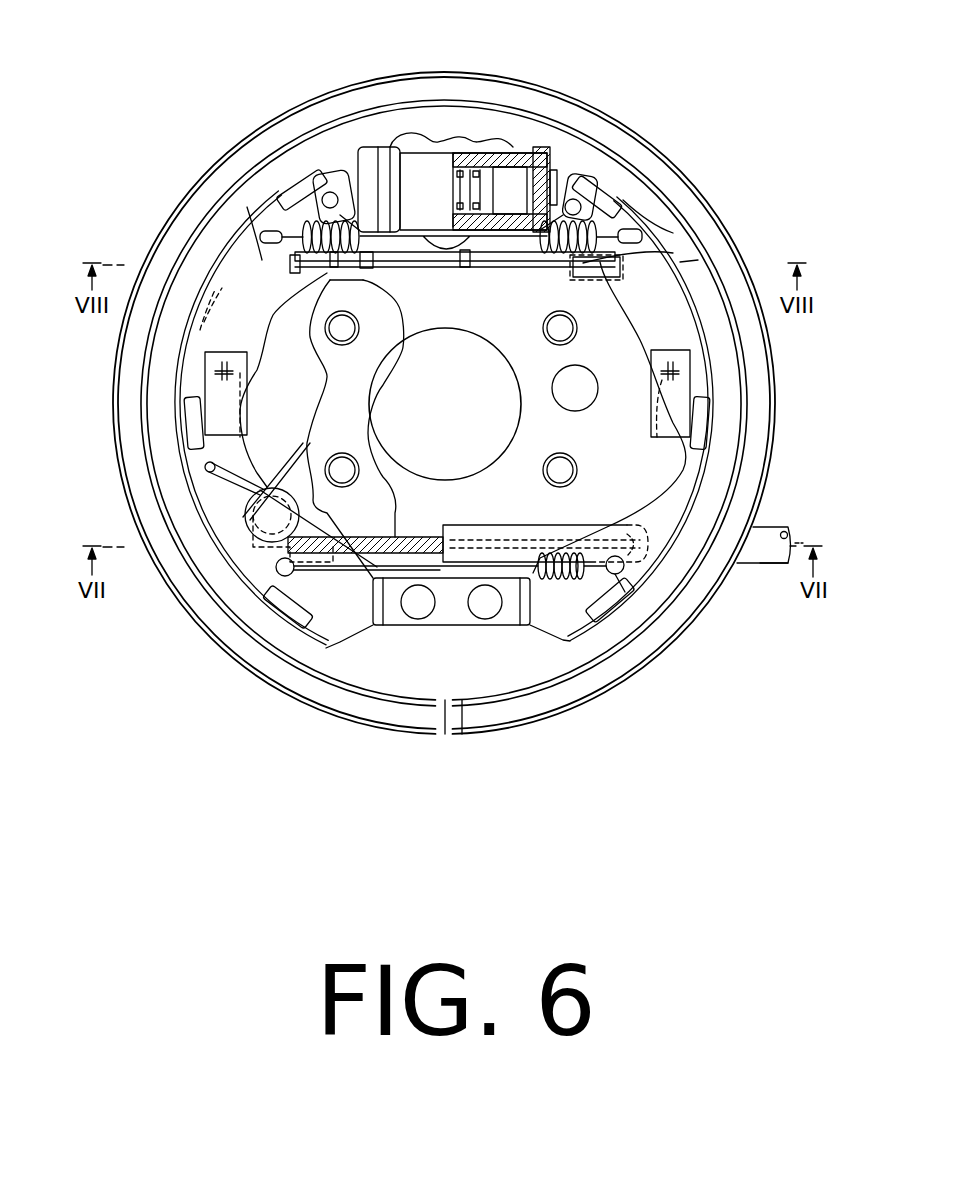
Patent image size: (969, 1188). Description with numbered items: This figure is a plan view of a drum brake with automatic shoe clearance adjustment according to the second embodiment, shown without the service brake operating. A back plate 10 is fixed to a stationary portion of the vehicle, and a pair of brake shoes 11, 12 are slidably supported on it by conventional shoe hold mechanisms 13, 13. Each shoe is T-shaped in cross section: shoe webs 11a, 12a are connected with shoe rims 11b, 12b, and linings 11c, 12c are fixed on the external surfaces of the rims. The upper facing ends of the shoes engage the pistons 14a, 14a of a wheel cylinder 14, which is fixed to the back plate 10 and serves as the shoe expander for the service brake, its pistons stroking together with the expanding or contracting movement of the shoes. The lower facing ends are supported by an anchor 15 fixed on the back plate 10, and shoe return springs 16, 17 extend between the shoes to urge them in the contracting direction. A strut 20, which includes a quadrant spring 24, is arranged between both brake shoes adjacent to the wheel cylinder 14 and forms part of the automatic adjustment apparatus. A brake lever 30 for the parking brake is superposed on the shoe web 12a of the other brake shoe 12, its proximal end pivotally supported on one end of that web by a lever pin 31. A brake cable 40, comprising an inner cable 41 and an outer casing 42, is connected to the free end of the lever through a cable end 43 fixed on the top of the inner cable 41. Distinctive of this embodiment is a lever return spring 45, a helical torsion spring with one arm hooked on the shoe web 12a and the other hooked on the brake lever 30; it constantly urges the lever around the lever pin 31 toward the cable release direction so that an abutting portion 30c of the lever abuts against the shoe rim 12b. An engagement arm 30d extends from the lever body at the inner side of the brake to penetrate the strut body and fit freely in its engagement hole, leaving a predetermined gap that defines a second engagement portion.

The back plate 10 is at (590, 100).
The brake shoe 11 is at (688, 275).
The shoe web 11a is at (640, 237).
The shoe rim 11b is at (673, 253).
The lining 11c is at (698, 260).
The brake shoe 12 is at (229, 363).
The shoe web 12a is at (262, 260).
The shoe rim 12b is at (210, 273).
The lining 12c is at (210, 293).
The shoe hold mechanism 13 is at (693, 387).
The wheel cylinder 14 is at (441, 132).
The piston 14a is at (365, 178).
The anchor 15 is at (450, 622).
The shoe return spring 16 is at (590, 228).
The shoe return spring 17 is at (562, 580).
The strut 20 is at (428, 273).
The quadrant spring 24 is at (535, 250).
The brake lever 30 is at (283, 347).
The abutting portion 30c is at (210, 305).
The engagement arm 30d is at (400, 278).
The lever pin 31 is at (340, 172).
The brake cable 40 is at (772, 525).
The inner cable 41 is at (400, 537).
The outer casing 42 is at (757, 564).
The cable end 43 is at (267, 547).
The lever return spring 45 is at (243, 520).